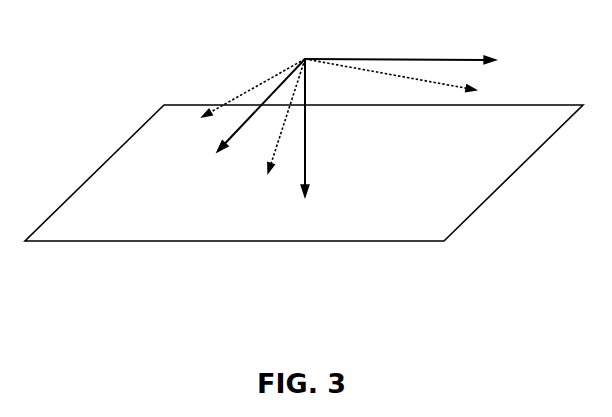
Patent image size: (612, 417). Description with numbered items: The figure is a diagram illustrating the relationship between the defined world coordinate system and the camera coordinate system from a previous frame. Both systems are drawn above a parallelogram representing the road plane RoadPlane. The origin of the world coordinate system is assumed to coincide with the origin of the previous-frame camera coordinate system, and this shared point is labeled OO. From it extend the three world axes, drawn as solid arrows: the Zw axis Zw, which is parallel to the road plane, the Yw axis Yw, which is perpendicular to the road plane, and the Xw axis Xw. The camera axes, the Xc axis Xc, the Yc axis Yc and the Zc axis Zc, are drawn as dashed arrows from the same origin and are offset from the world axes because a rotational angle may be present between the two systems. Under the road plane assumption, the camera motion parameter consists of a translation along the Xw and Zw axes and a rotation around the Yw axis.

The road plane RoadPlane is at (304, 173).
The coincident origins of the world and camera coordinate systems OO is at (306, 44).
The Zw axis of the world coordinate system Zw is at (417, 50).
The Zc axis of the camera coordinate system Zc is at (424, 82).
The Yc axis of the camera coordinate system Yc is at (282, 128).
The Xc axis of the camera coordinate system Xc is at (236, 88).
The Xw axis of the world coordinate system Xw is at (257, 105).
The Yw axis of the world coordinate system Yw is at (258, 185).